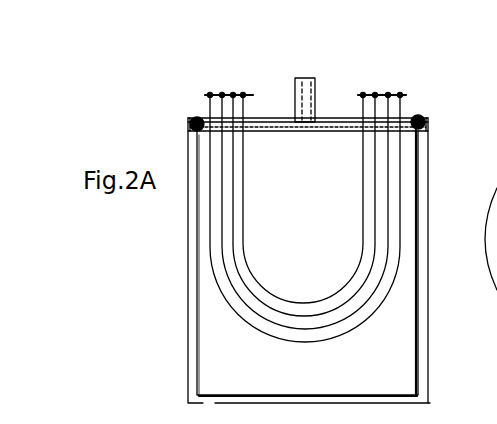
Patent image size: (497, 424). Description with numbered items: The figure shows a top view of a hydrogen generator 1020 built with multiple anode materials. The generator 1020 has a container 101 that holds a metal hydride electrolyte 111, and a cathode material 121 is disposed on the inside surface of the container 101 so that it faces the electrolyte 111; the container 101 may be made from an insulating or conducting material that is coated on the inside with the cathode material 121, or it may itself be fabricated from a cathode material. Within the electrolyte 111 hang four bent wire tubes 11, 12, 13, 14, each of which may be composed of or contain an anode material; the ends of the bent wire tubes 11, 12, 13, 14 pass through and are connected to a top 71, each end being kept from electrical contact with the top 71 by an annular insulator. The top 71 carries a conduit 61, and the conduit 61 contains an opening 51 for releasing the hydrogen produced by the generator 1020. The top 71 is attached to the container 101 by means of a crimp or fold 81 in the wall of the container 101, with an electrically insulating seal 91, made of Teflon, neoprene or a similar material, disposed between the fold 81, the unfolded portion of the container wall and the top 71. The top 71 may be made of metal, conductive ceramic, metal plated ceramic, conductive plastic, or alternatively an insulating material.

The bent wire tube 11 is at (207, 93).
The bent wire tube 12 is at (222, 93).
The bent wire tube 13 is at (233, 93).
The bent wire tube 14 is at (246, 92).
The opening 51 is at (314, 74).
The conduit 61 is at (318, 93).
The top 71 is at (322, 118).
The crimp or fold 81 is at (191, 113).
The electrically insulating seal 91 is at (190, 127).
The container 101 is at (424, 160).
The metal hydride electrolyte 111 is at (197, 362).
The cathode material 121 is at (197, 316).
The hydrogen generator 1020 is at (180, 244).